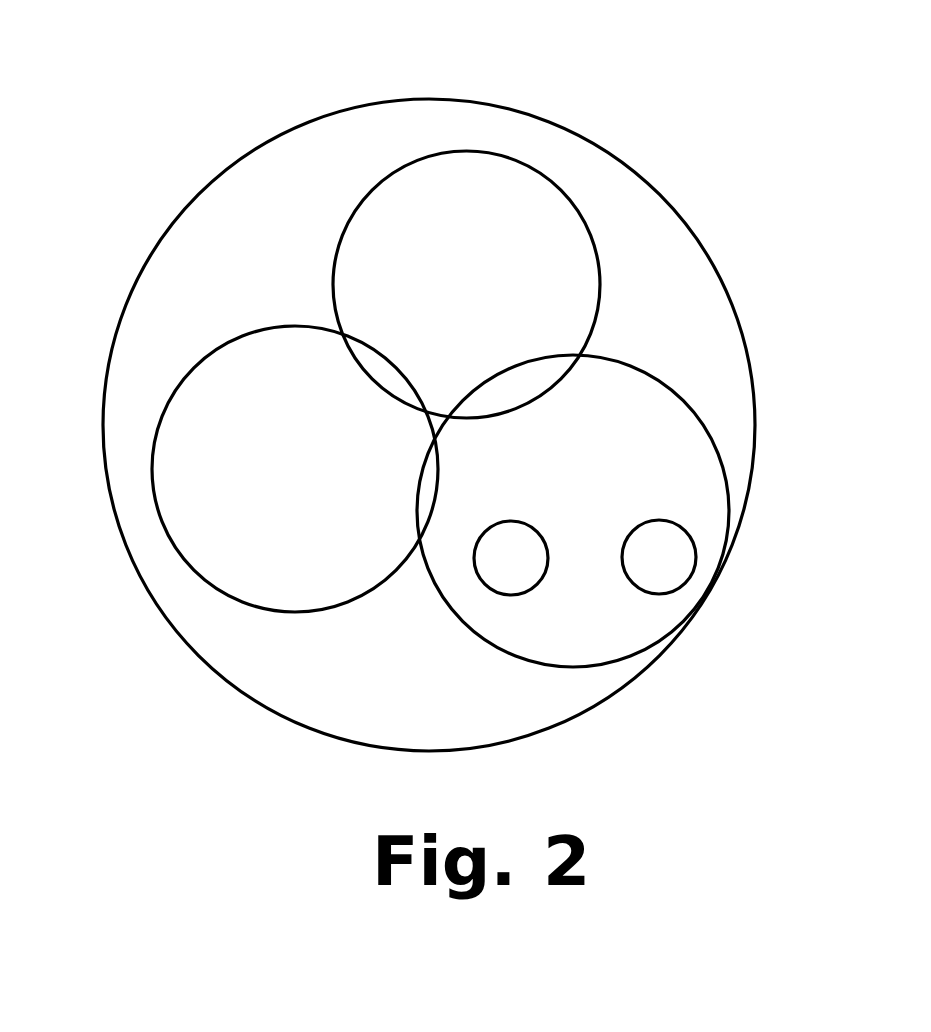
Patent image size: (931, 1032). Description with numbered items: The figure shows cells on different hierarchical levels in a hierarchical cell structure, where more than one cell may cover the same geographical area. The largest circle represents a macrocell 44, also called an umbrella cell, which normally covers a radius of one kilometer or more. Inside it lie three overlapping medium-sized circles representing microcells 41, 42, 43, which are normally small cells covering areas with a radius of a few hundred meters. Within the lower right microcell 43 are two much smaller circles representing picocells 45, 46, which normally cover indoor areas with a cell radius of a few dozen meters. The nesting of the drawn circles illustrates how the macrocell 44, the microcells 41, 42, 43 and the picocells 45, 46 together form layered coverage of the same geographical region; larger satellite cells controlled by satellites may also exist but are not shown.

The microcell 41 is at (155, 470).
The microcell 42 is at (467, 151).
The microcell 43 is at (712, 440).
The macrocell 44 is at (400, 101).
The picocell 45 is at (510, 596).
The picocell 46 is at (657, 595).